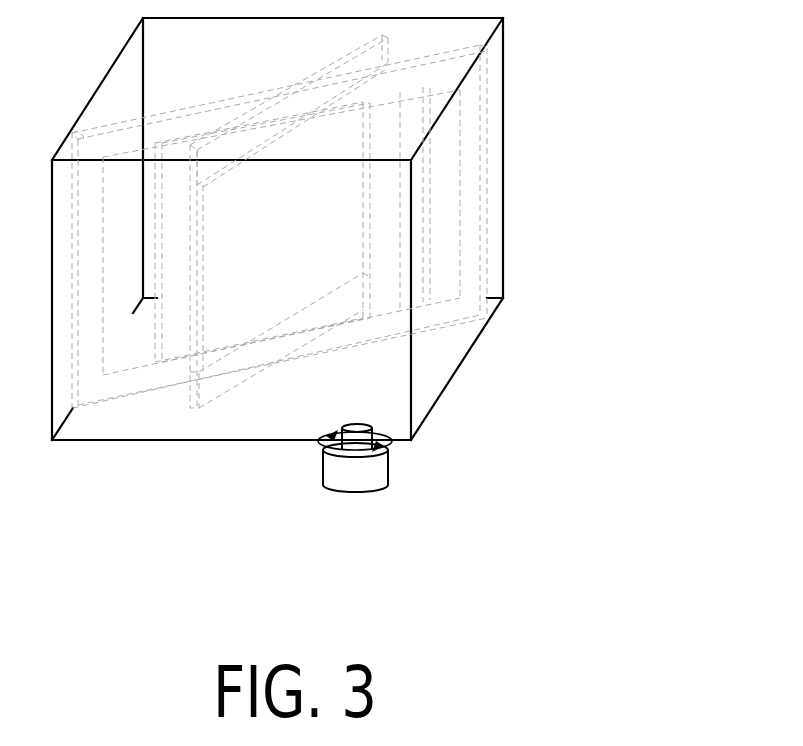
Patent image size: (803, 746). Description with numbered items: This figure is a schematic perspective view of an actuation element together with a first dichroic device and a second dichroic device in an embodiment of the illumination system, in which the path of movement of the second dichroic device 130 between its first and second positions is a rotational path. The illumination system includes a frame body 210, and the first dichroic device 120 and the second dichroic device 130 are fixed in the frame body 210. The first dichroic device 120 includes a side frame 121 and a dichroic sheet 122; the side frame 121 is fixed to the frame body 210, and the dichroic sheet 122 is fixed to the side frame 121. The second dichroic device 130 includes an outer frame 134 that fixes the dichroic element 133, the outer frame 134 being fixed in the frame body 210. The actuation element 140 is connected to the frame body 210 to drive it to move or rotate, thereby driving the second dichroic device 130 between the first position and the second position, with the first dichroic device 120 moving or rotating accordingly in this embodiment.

The first dichroic device 120 is at (253, 318).
The side frame 121 is at (224, 375).
The dichroic sheet 122 is at (218, 325).
The second dichroic device 130 is at (396, 226).
The dichroic element 133 is at (438, 167).
The outer frame 134 is at (473, 98).
The actuation element 140 is at (365, 475).
The frame body 210 is at (445, 388).